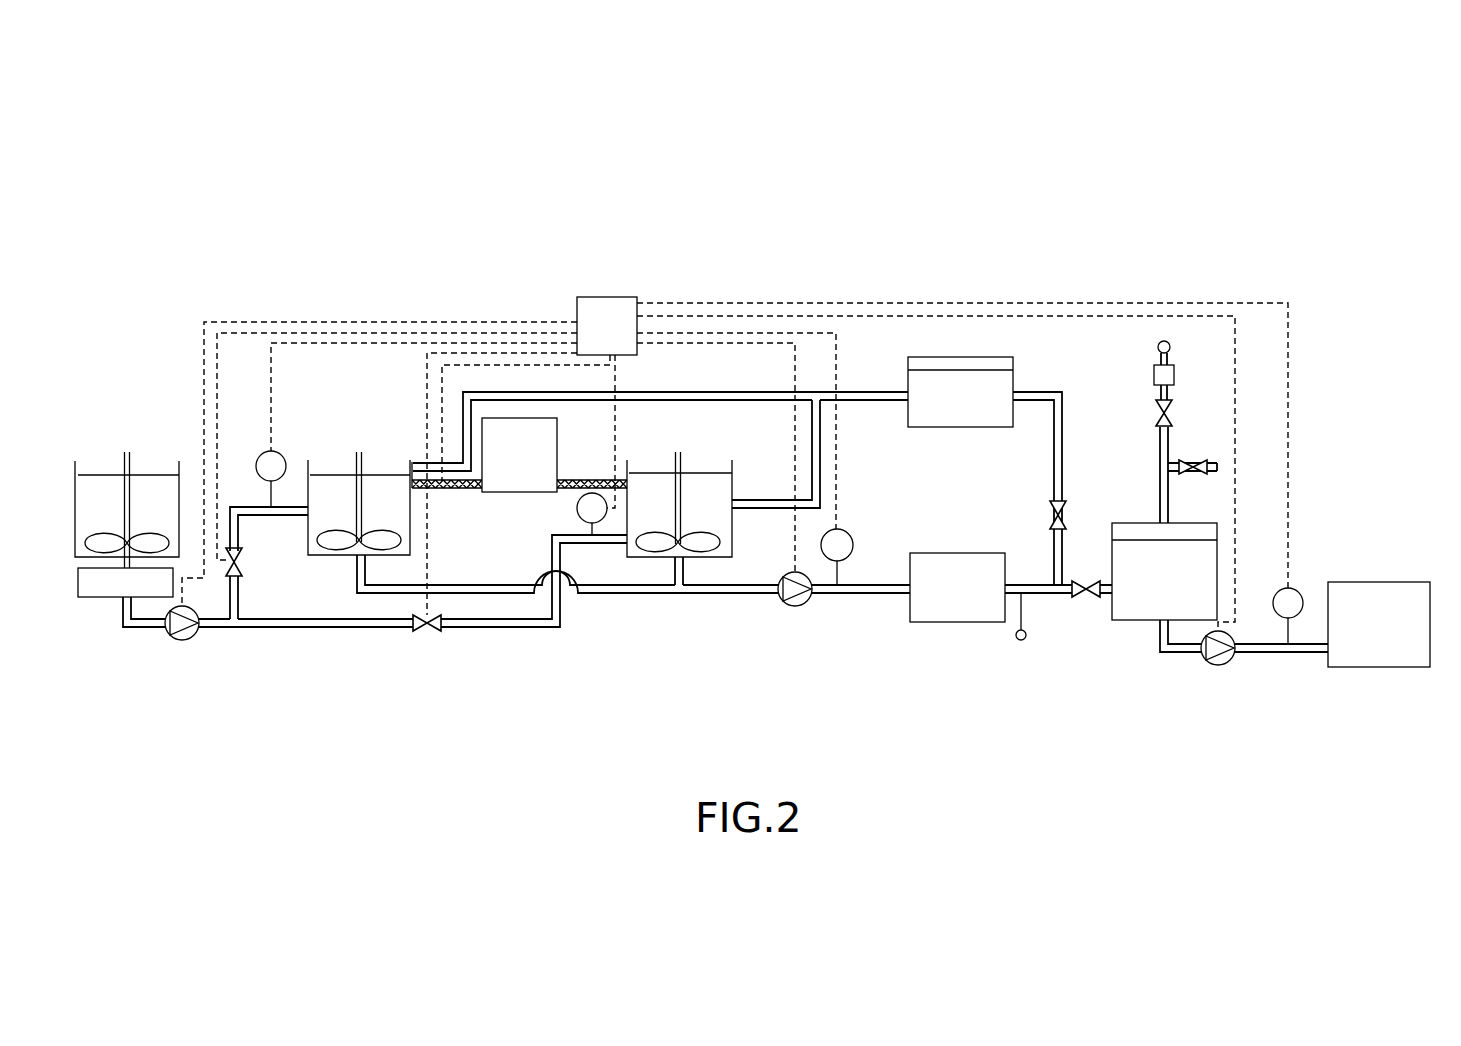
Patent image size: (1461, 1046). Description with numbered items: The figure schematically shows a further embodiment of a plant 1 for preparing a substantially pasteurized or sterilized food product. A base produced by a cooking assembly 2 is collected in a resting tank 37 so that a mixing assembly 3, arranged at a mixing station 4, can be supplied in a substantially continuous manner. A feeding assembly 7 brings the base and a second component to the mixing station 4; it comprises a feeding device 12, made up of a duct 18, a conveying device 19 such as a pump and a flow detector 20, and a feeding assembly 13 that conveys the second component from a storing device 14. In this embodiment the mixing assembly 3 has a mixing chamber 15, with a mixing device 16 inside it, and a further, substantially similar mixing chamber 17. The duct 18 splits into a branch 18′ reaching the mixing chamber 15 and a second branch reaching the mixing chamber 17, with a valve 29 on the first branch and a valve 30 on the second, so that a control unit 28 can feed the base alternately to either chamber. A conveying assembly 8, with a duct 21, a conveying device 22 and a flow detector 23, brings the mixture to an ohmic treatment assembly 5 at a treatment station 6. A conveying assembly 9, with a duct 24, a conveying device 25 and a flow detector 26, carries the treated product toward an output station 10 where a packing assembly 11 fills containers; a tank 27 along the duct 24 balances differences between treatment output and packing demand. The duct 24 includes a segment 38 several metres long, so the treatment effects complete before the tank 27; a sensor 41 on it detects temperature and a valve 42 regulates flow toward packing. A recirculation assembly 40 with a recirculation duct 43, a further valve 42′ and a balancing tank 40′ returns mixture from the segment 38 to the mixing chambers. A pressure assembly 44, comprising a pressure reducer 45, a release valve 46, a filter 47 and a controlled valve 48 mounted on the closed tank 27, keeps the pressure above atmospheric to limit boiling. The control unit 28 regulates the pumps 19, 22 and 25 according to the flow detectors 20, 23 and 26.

The plant 1 is at (852, 261).
The cooking assembly 2 is at (100, 458).
The mixing assembly 3 is at (448, 303).
The mixing station 4 is at (396, 285).
The ohmic treatment assembly 5 is at (985, 540).
The treatment station 6 is at (950, 522).
The feeding assembly 7 is at (448, 413).
The conveying assembly 8 is at (746, 612).
The conveying assembly 9 is at (1222, 672).
The output station 10 is at (1379, 551).
The packing assembly 11 is at (1365, 673).
The feeding device 12 is at (304, 633).
The feeding assembly 13 is at (586, 468).
The storing device 14 is at (508, 468).
The mixing chamber 15 is at (302, 475).
The mixing device 16 is at (363, 462).
The further mixing chamber 17 is at (736, 478).
The duct 18 is at (131, 628).
The branch 18′ is at (262, 516).
The conveying device 19 is at (182, 642).
The flow detector 20 is at (259, 462).
The duct 21 is at (718, 596).
The conveying device 22 is at (806, 605).
The flow detector 23 is at (848, 536).
The duct 24 is at (1180, 653).
The conveying device 25 is at (1231, 639).
The flow detector 26 is at (1299, 592).
The tank 27 is at (1110, 548).
The control unit 28 is at (595, 339).
The valve 29 is at (243, 570).
The valve 30 is at (432, 635).
The resting tank 37 is at (98, 597).
The segment 38 is at (1067, 598).
The recirculation assembly 40 is at (1041, 358).
The tank 40′ is at (930, 357).
The sensor 41 is at (1018, 642).
The valve 42 is at (1090, 604).
The further valve 42′ is at (1047, 515).
The recirculation duct 43 is at (724, 392).
The pressure assembly 44 is at (1194, 385).
The pressure reducer 45 is at (1170, 347).
The release valve 46 is at (1190, 473).
The filter 47 is at (1154, 375).
The controlled valve 48 is at (1156, 415).